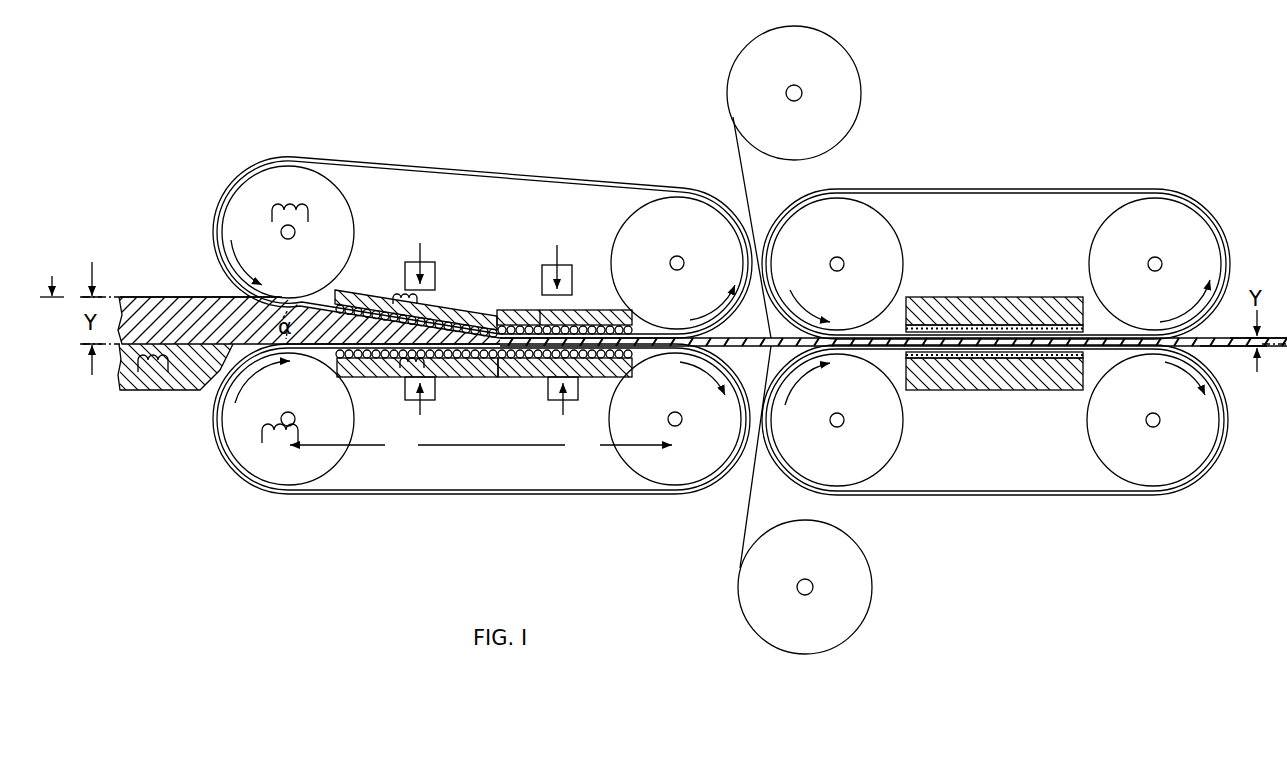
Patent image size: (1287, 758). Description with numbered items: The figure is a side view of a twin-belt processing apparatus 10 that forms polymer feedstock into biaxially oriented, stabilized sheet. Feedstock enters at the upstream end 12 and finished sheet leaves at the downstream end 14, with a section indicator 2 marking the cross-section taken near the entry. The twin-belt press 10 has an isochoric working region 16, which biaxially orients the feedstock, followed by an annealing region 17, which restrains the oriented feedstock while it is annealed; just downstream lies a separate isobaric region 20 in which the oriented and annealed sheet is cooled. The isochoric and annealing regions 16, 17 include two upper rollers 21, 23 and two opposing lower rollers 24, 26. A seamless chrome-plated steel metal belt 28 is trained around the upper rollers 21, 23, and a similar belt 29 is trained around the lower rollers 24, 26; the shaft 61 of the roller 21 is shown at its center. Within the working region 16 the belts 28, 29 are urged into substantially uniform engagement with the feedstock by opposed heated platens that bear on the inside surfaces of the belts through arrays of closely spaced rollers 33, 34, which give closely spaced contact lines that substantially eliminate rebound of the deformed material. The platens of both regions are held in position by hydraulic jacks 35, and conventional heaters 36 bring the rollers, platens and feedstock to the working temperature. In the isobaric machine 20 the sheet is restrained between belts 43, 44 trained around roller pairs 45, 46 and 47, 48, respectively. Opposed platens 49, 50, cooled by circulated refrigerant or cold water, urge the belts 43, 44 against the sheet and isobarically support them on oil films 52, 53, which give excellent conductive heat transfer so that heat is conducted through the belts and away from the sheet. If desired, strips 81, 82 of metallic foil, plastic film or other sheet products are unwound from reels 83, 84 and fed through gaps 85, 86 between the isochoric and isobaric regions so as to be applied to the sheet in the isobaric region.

The section line indicator 2 is at (52, 275).
The twin-belt processing apparatus 10 is at (473, 158).
The upstream end 12 is at (205, 279).
The downstream end 14 is at (1210, 350).
The isochoric working region 16 is at (390, 445).
The annealing region 17 is at (581, 445).
The isobaric region 20 is at (1052, 186).
The upper roller 21 is at (301, 193).
The upper roller 23 is at (689, 233).
The lower roller 24 is at (300, 395).
The lower roller 26 is at (686, 393).
The metal belt 28 is at (520, 176).
The belt 29 is at (433, 494).
The closely spaced rollers 33 is at (470, 321).
The closely spaced rollers 34 is at (466, 362).
The hydraulic jacks 35 is at (405, 262).
The heaters 36 is at (272, 224).
The belt 43 is at (972, 198).
The belt 44 is at (959, 492).
The roller 45 is at (893, 263).
The roller 46 is at (1093, 238).
The roller 47 is at (883, 452).
The roller 48 is at (1102, 428).
The cooled platen 49 is at (1010, 305).
The cooled platen 50 is at (1016, 381).
The oil film 52 is at (978, 323).
The oil film 53 is at (965, 360).
The roller shaft 61 is at (294, 236).
The strip 81 is at (751, 189).
The strip 82 is at (750, 504).
The reel 83 is at (806, 63).
The reel 84 is at (817, 563).
The gap 85 is at (708, 182).
The gap 86 is at (747, 447).